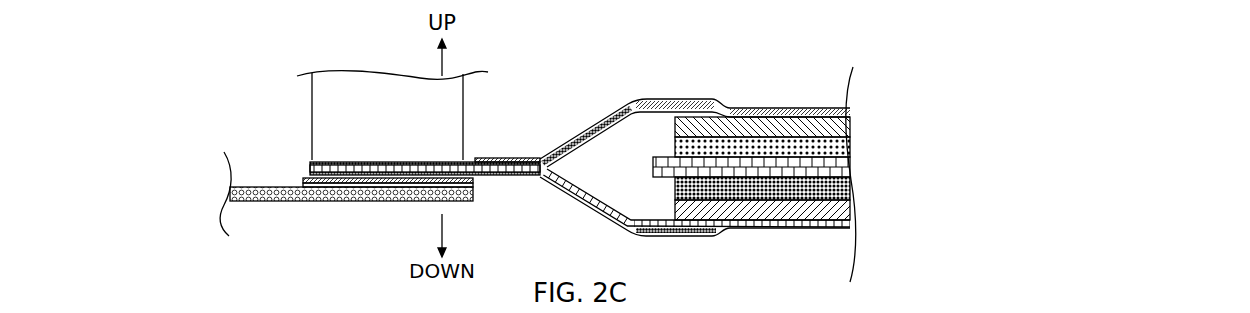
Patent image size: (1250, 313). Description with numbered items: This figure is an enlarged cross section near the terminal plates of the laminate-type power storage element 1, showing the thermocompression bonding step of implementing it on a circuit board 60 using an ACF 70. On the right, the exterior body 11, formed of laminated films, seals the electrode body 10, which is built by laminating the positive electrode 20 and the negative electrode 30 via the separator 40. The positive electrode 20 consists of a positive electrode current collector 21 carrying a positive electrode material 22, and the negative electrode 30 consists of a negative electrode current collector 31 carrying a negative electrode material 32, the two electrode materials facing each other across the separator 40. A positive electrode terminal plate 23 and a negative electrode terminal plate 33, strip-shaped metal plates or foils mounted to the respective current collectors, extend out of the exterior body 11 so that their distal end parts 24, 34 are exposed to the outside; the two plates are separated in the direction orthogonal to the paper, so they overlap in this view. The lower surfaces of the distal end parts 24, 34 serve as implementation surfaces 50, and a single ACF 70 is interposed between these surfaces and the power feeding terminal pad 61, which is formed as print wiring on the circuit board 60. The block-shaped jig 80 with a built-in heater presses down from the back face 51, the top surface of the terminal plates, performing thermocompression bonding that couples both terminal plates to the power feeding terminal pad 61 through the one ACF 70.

The laminate-type power storage element 1 is at (800, 79).
The electrode body 10 is at (815, 164).
The exterior body 11 is at (695, 171).
The positive electrode 20 is at (805, 133).
The positive electrode current collector 21 is at (842, 143).
The positive electrode material 22 is at (840, 121).
The positive electrode terminal plate 23 is at (680, 238).
The distal end part of the positive electrode terminal plate 24 is at (308, 162).
The negative electrode 30 is at (809, 197).
The negative electrode current collector 31 is at (850, 190).
The negative electrode material 32 is at (852, 209).
The negative electrode terminal plate 33 is at (688, 98).
The distal end part of the negative electrode terminal plate 34 is at (425, 170).
The separator 40 is at (853, 167).
The implementation surface 50 is at (323, 174).
The back face 51 is at (474, 161).
The circuit board 60 is at (367, 196).
The power feeding terminal pad 61 is at (476, 184).
The ACF 70 is at (305, 176).
The jig 80 is at (357, 86).